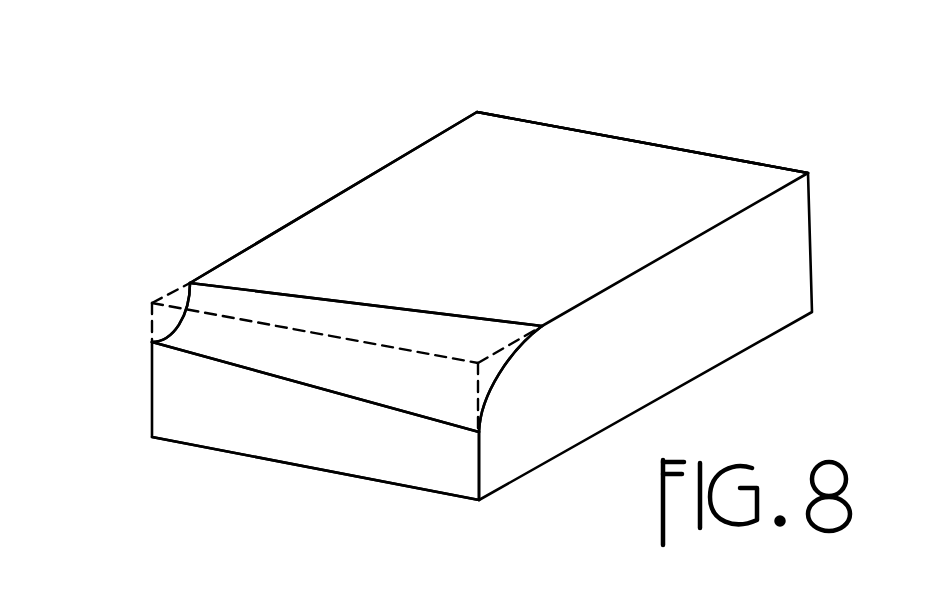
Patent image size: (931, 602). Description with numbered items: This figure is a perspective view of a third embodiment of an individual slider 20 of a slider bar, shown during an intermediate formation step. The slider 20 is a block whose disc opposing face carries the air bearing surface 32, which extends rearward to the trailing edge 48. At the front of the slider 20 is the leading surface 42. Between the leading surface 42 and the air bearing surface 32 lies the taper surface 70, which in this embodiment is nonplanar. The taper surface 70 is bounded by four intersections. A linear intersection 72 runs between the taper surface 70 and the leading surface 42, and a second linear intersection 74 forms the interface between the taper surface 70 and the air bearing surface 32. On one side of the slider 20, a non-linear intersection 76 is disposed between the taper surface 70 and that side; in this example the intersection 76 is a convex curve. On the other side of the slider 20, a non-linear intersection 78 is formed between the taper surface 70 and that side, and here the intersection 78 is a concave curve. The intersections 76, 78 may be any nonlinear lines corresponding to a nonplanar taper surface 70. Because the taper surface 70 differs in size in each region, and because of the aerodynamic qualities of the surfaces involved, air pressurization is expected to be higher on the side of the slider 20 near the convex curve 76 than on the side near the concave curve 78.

The slider 20 is at (678, 94).
The air bearing surface 32 is at (505, 147).
The trailing edge 48 is at (708, 152).
The linear intersection 74 is at (397, 308).
The non-linear intersection 78 is at (175, 320).
The linear intersection 72 is at (233, 367).
The leading surface 42 is at (322, 455).
The taper surface 70 is at (425, 385).
The non-linear intersection 76 is at (510, 370).